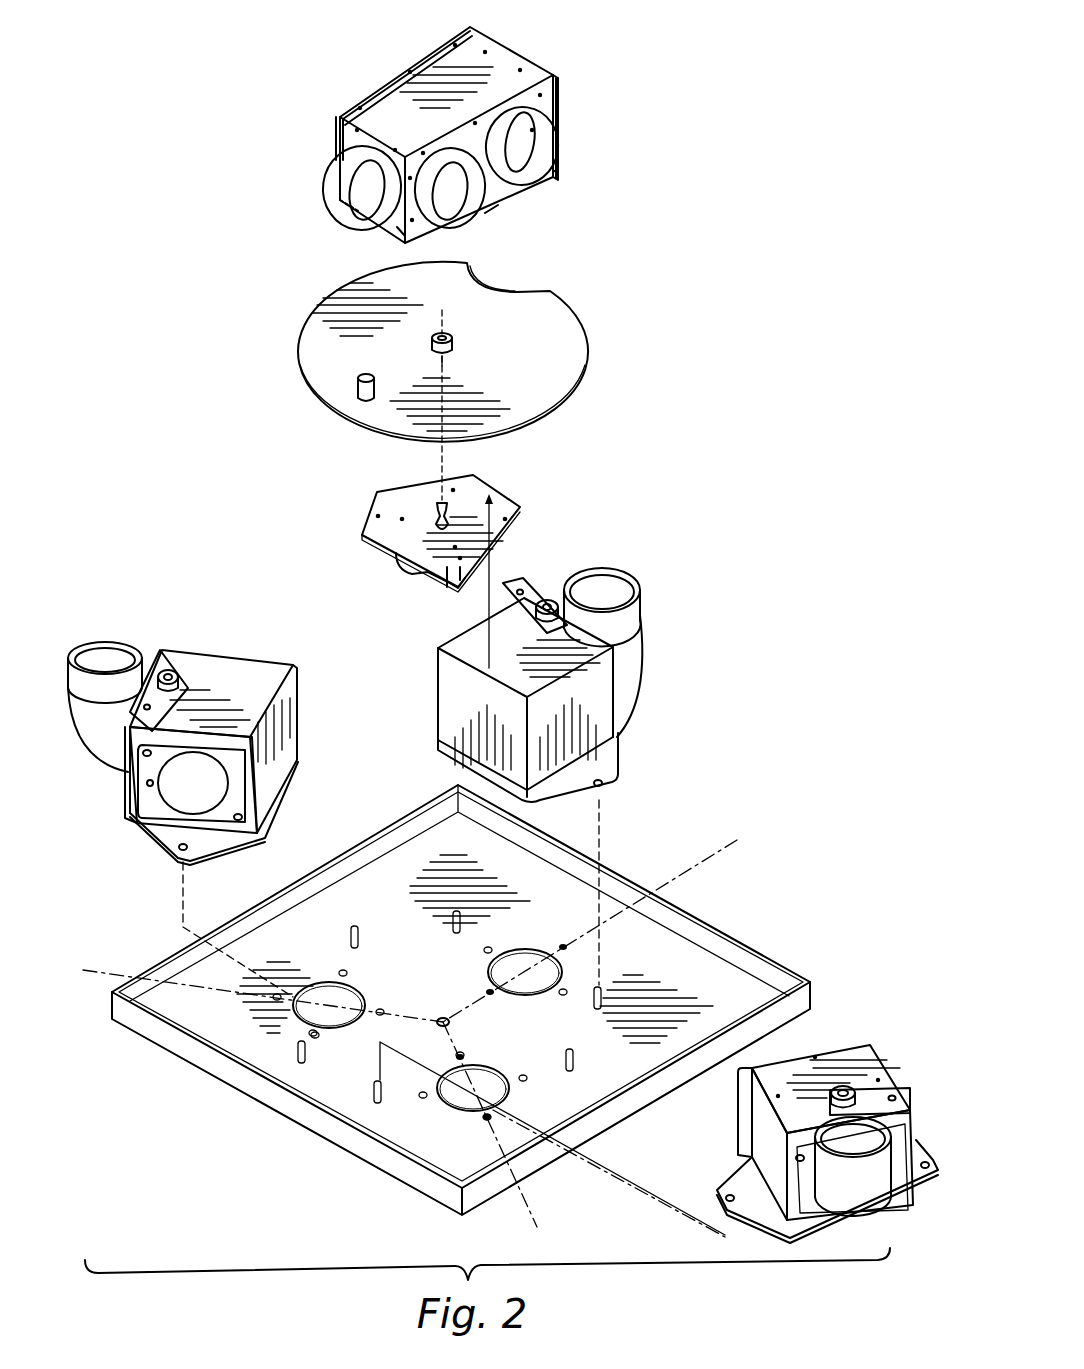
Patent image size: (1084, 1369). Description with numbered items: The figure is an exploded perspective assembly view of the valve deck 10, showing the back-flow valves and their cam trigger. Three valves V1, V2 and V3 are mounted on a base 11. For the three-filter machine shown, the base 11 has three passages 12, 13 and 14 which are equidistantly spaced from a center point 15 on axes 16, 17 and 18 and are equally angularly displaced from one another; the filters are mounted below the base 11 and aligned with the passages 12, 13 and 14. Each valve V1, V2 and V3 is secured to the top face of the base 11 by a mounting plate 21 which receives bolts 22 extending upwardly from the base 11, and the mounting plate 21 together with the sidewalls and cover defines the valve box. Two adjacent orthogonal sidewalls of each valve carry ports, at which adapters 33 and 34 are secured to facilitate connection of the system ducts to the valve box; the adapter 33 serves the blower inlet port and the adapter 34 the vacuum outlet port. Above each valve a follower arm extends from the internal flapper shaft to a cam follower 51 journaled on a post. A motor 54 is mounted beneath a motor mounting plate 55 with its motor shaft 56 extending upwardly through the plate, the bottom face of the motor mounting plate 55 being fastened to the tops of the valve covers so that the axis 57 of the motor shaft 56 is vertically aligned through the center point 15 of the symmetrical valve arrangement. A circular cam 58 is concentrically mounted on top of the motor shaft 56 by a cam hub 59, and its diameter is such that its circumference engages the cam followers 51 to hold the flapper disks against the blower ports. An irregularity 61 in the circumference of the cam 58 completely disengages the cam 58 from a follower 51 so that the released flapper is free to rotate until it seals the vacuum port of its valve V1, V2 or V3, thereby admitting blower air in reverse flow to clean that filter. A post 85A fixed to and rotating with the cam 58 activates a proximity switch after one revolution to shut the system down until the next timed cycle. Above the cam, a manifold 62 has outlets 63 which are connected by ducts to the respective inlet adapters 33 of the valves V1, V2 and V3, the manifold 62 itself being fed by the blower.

The valve deck 10 is at (692, 384).
The base 11 is at (397, 883).
The passage 12 is at (357, 1027).
The passage 13 is at (533, 947).
The passage 14 is at (480, 1112).
The center point 15 is at (442, 1018).
The axis 16 is at (100, 972).
The axis 17 is at (717, 852).
The axis 18 is at (530, 1203).
The mounting plate 21 is at (165, 835).
The bolt 22 is at (377, 1093).
The adapter 33 is at (92, 733).
The adapter 34 is at (135, 822).
The cam follower 51 is at (169, 672).
The motor 54 is at (400, 570).
The motor mounting plate 55 is at (397, 487).
The motor shaft 56 is at (448, 506).
The axis 57 is at (447, 363).
The circular cam 58 is at (310, 312).
The cam hub 59 is at (452, 340).
The irregularity 61 is at (518, 290).
The manifold 62 is at (407, 78).
The outlet 63 is at (333, 185).
The post 85A is at (358, 385).
The valve V1 is at (153, 626).
The valve V2 is at (633, 696).
The valve V3 is at (827, 1037).